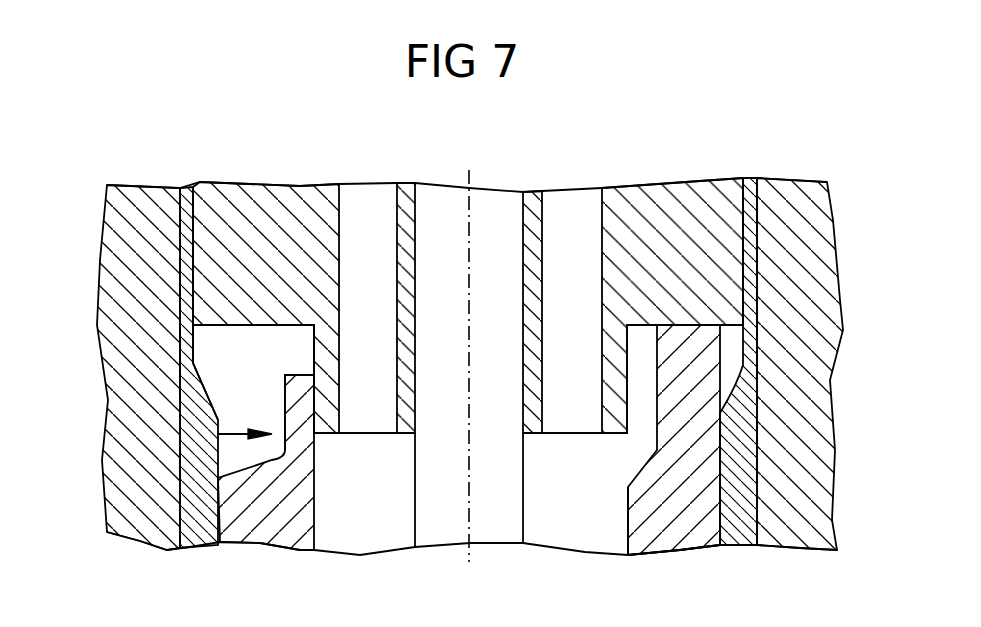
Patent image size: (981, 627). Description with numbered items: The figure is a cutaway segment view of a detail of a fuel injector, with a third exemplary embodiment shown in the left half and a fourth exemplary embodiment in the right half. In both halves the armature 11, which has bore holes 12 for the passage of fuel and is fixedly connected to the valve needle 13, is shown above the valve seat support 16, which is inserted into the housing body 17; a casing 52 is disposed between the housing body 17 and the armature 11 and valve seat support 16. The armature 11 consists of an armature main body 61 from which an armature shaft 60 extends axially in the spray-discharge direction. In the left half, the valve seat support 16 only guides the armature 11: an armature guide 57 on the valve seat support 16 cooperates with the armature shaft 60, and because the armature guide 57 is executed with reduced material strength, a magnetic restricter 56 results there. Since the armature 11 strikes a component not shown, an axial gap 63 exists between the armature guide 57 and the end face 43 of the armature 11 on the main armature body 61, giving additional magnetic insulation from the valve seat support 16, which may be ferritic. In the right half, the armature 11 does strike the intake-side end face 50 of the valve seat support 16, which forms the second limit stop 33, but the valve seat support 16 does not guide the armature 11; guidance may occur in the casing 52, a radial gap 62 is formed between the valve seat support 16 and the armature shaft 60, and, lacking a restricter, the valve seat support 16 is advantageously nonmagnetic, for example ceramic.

The armature 11 is at (527, 205).
The bore holes 12 is at (397, 295).
The valve needle 13 is at (447, 527).
The valve seat support 16 is at (263, 537).
The housing body 17 is at (140, 535).
The second limit stop 33 is at (677, 320).
The end face of armature 43 is at (213, 347).
The intake-side end face 50 is at (702, 325).
The casing 52 is at (198, 535).
The magnetic restricter 56 is at (218, 434).
The armature guide 57 is at (295, 398).
The armature shaft 60 is at (326, 397).
The armature main body 61 is at (250, 197).
The radial gap 62 is at (642, 383).
The axial gap 63 is at (298, 350).